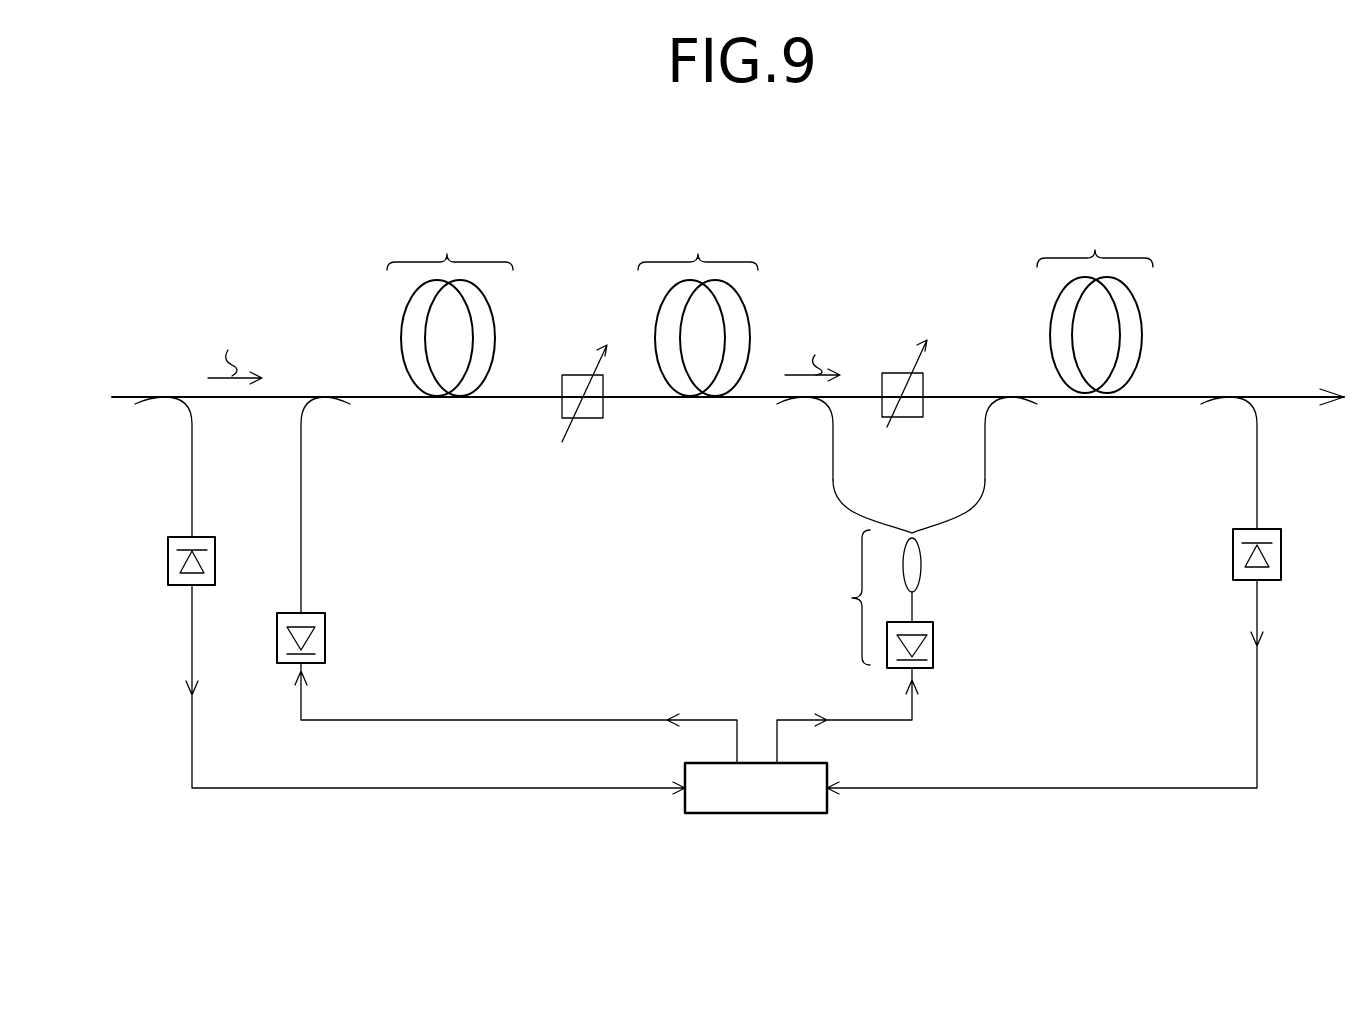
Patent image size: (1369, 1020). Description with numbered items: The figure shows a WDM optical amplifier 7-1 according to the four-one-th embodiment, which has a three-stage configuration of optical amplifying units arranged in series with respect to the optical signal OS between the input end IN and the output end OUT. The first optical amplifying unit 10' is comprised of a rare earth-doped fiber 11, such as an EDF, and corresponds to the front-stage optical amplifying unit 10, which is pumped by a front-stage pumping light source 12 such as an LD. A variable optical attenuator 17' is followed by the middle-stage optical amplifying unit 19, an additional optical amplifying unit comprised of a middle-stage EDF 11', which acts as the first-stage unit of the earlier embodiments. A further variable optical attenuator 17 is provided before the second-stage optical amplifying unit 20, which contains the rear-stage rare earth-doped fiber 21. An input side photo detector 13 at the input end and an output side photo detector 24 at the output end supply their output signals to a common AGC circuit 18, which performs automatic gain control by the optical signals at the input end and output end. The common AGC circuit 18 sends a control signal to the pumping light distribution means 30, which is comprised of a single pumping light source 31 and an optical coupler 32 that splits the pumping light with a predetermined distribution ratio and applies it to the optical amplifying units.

The WDM optical amplifier 7-1 is at (860, 203).
The optical amplifying unit 10' is at (470, 299).
The front-stage rare earth-doped fiber 11 is at (477, 338).
The VOA 17' is at (605, 414).
The middle-stage optical amplifying unit 19 is at (728, 320).
The middle-stage EDF 11' is at (736, 334).
The first-stage optical amplifying unit 10 is at (712, 418).
The variable optical attenuator 17 is at (939, 383).
The second-stage optical amplifying unit 20 is at (1123, 297).
The rear-stage rare earth-doped fiber 21 is at (1105, 330).
The input side photo detector 13 is at (168, 560).
The front-stage pumping light source 12 is at (325, 637).
The pumping light distribution means 30 is at (903, 574).
The optical coupler 32 is at (921, 555).
The pumping light source 31 is at (933, 637).
The output side PD 24 is at (1282, 553).
The common AGC circuit 18 is at (755, 813).